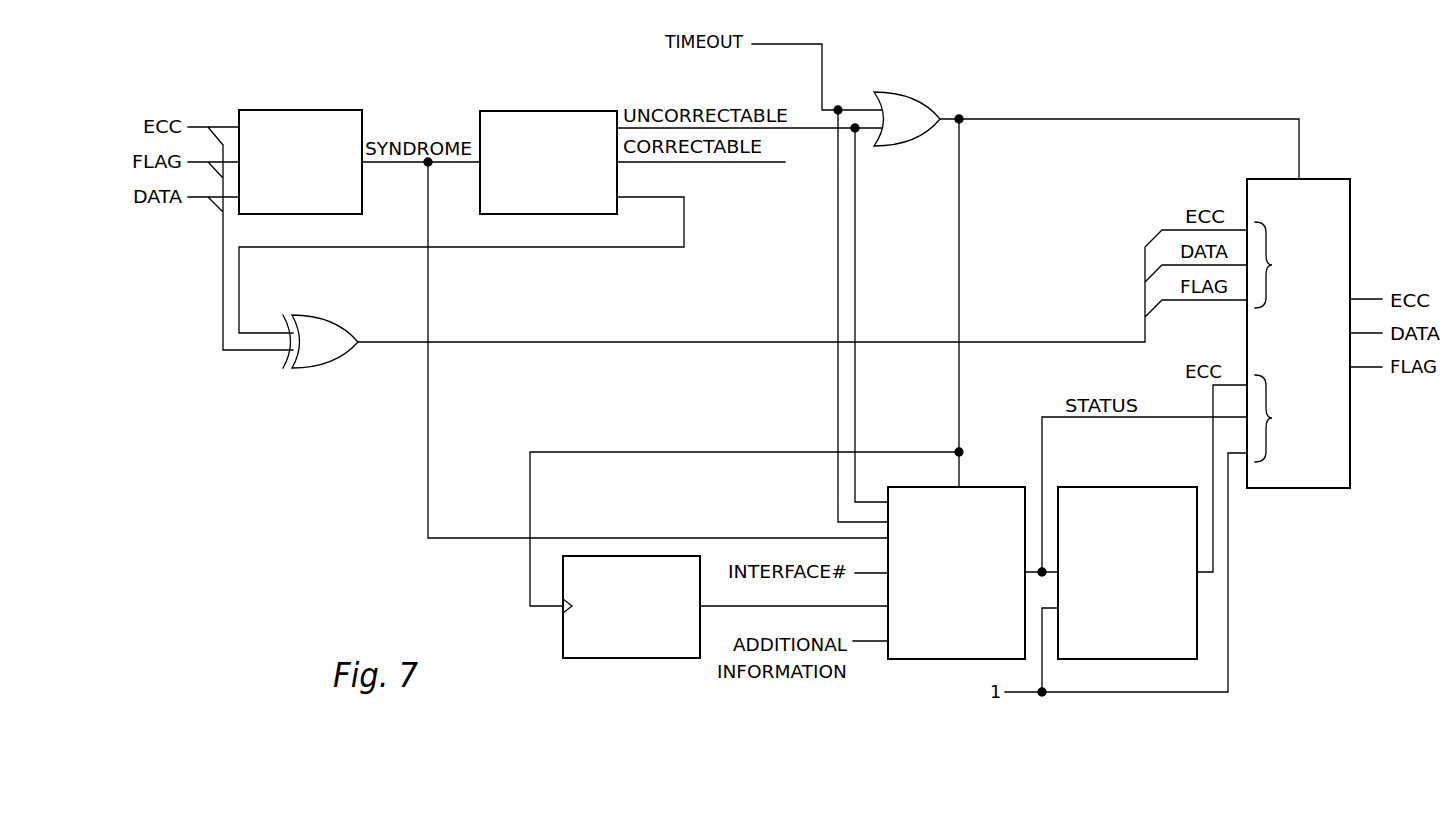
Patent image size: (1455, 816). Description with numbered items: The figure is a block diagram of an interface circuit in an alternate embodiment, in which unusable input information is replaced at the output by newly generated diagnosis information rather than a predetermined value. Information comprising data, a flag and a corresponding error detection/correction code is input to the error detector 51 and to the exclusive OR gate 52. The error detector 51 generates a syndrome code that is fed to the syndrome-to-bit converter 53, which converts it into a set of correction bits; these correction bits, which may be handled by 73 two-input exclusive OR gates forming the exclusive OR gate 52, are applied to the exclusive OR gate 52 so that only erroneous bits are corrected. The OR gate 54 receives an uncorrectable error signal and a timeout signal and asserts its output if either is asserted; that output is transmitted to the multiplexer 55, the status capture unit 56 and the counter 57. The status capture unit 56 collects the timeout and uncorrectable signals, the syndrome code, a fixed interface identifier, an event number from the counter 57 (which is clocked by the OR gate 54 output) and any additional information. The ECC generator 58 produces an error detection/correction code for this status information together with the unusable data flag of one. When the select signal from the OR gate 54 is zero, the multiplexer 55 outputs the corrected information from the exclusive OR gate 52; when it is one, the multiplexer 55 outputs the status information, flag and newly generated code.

The error detector 51 is at (290, 194).
The exclusive OR gate 52 is at (325, 365).
The syndrome-to-bit converter 53 is at (538, 206).
The OR gate 54 is at (922, 96).
The multiplexer 55 is at (1317, 178).
The status capture unit 56 is at (945, 605).
The counter 57 is at (618, 630).
The ECC generator 58 is at (1138, 605).
The two-input exclusive OR gates 73 is at (655, 238).